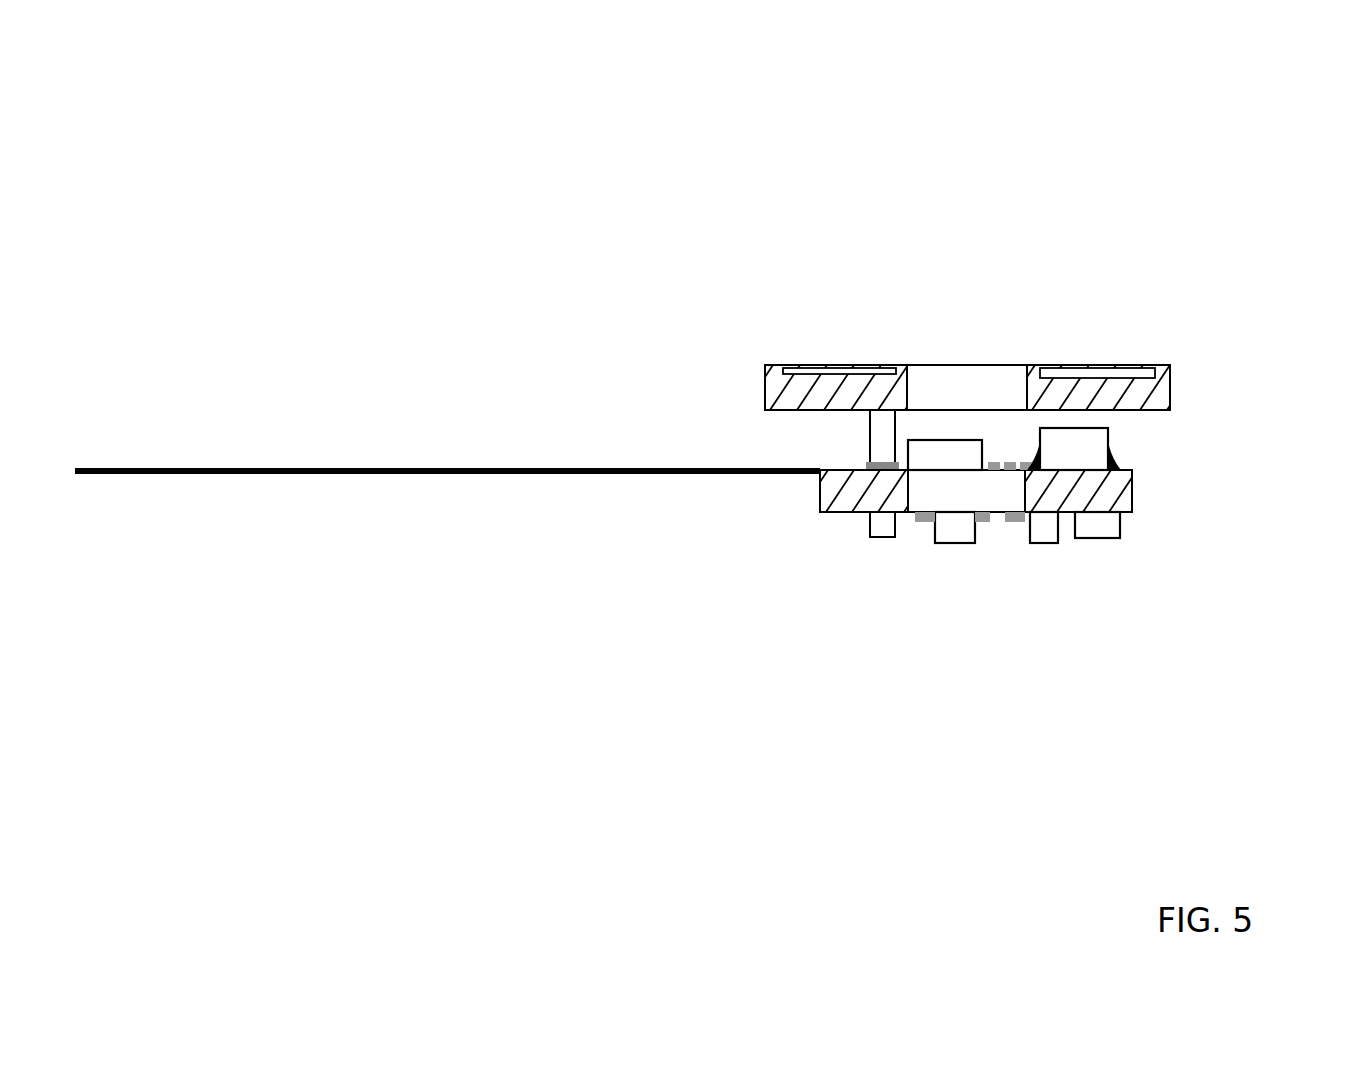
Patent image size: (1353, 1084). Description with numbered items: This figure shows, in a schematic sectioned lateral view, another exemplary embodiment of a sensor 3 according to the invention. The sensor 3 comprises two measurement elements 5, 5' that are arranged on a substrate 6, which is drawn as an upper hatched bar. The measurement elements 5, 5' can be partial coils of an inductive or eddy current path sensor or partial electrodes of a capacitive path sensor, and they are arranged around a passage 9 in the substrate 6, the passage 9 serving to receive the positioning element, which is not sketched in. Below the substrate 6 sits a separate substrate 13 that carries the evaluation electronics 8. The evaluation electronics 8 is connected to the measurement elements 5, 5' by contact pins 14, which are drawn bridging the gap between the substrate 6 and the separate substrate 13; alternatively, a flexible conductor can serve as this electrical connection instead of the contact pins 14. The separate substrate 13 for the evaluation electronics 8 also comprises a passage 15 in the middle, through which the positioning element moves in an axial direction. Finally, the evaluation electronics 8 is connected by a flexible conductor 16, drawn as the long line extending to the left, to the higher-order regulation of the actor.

The sensor 3 is at (1108, 235).
The measurement element 5 is at (1167, 329).
The measurement element 5' is at (773, 319).
The substrate 6 is at (1153, 412).
The evaluation electronics 8 is at (1115, 555).
The passage 9 is at (946, 345).
The separate substrate 13 is at (845, 513).
The contact pins 14 is at (857, 435).
The passage 15 is at (932, 543).
The flexible conductor 16 is at (392, 475).